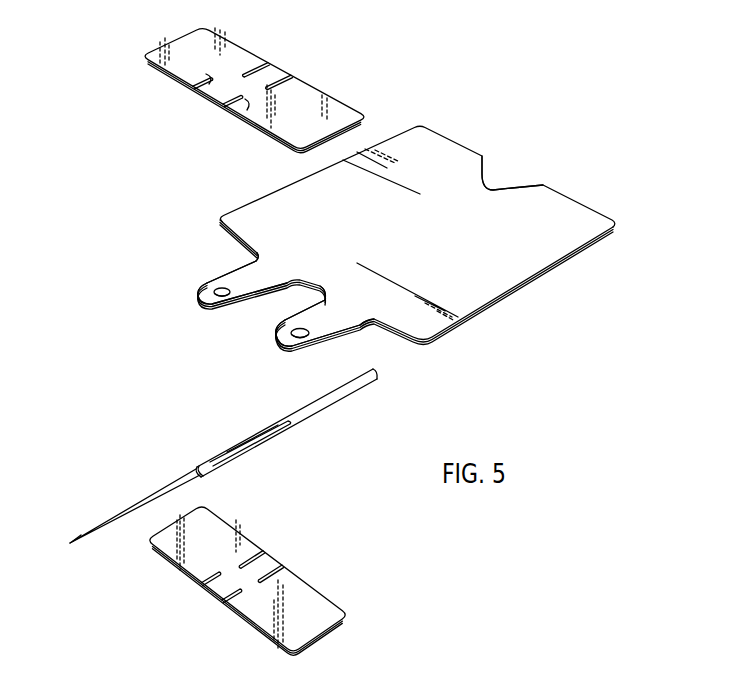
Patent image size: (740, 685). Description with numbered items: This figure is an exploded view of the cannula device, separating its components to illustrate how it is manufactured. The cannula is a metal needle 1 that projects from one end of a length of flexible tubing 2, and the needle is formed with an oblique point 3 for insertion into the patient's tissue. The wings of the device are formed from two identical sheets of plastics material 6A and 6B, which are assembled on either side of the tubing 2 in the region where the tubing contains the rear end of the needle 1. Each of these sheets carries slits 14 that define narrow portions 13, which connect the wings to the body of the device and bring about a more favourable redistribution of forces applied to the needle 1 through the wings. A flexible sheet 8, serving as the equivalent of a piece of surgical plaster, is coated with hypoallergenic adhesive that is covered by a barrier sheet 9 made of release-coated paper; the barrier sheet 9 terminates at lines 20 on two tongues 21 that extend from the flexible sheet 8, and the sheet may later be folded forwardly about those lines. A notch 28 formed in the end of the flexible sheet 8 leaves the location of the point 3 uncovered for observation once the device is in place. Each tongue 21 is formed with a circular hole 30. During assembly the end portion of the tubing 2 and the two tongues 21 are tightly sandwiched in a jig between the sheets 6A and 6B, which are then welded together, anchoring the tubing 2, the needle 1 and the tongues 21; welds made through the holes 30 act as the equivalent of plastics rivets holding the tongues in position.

The needle 1 is at (123, 511).
The flexible tubing 2 is at (335, 398).
The oblique point 3 is at (70, 545).
The sheet of plastics material 6A is at (237, 52).
The sheet of plastics material 6B is at (317, 598).
The flexible sheet 8 is at (543, 277).
The barrier sheet 9 is at (595, 212).
The narrow portions 13 is at (182, 87).
The slits 14 is at (269, 63).
The lines 20 is at (253, 262).
The tongues 21 is at (206, 280).
The notch 28 is at (511, 186).
The circular hole 30 is at (221, 298).